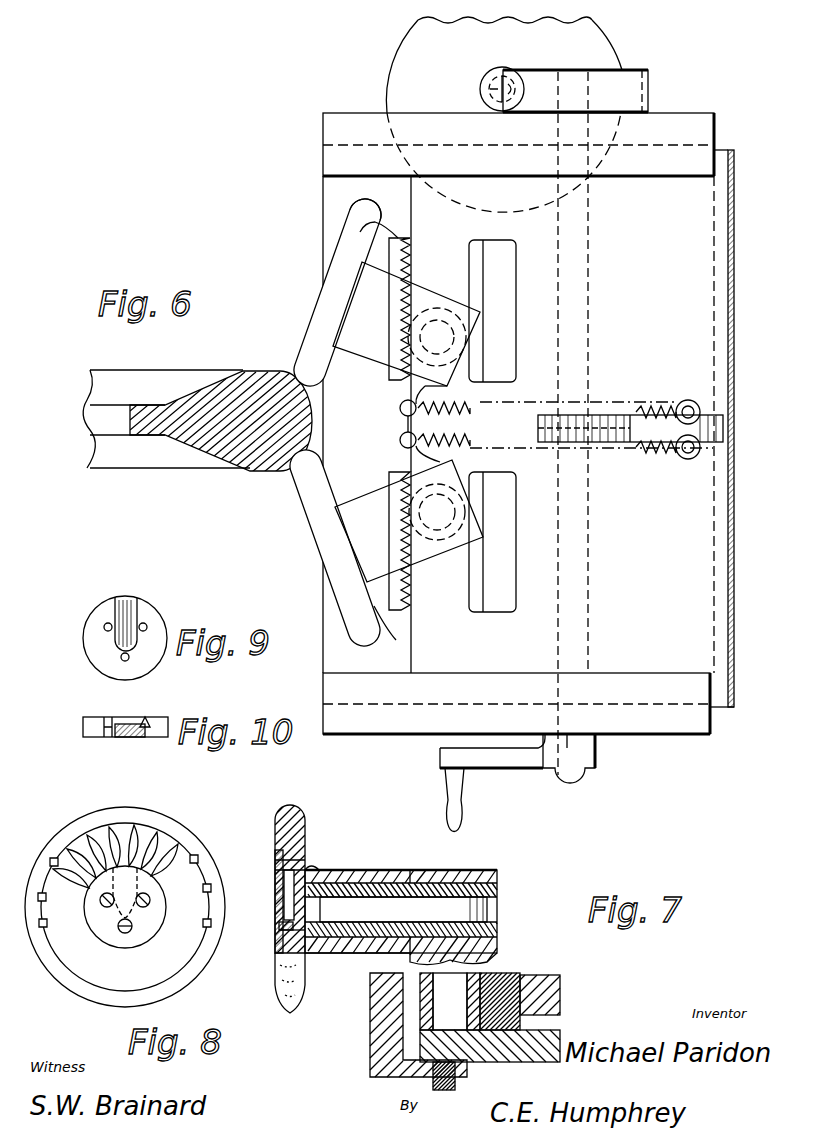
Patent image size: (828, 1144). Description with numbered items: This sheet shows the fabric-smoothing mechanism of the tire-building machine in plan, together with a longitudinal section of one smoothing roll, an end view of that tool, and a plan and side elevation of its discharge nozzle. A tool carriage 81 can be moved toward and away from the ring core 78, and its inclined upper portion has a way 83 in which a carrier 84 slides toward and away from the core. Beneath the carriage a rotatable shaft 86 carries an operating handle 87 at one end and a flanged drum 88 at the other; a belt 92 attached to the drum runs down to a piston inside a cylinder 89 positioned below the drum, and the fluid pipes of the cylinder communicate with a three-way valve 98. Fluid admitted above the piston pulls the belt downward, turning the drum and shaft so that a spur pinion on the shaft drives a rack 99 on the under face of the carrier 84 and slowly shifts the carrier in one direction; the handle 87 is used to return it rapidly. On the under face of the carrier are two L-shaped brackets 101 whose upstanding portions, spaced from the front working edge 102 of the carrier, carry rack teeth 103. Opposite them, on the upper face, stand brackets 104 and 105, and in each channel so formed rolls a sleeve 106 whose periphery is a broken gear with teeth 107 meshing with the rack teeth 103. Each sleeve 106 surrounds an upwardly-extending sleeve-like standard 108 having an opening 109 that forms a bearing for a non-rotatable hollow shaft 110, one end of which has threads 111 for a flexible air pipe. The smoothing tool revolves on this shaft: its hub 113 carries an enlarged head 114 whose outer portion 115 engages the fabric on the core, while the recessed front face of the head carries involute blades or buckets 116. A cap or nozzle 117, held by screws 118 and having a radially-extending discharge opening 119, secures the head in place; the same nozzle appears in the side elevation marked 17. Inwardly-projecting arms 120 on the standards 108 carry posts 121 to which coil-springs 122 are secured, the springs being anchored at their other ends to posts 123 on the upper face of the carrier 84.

In FIG. 10, the bar 17 is at (83, 727).
In FIG. 6, the core 78 is at (140, 420).
In FIG. 6, the tool carriage 81 is at (360, 98).
In FIG. 6, the way 83 is at (708, 150).
In FIG. 6, the carrier 84 is at (677, 428).
In FIG. 7, the carrier 84 is at (560, 1045).
In FIG. 6, the rotatable shaft 86 is at (574, 622).
In FIG. 6, the operating handle 87 is at (465, 800).
In FIG. 6, the flanged drum 88 is at (646, 75).
In FIG. 6, the cylinder 89 is at (504, 114).
In FIG. 6, the belt 92 is at (528, 80).
In FIG. 6, the three-way valve 98 is at (549, 414).
In FIG. 6, the rack 99 is at (622, 414).
In FIG. 6, the brackets 101 is at (400, 240).
In FIG. 7, the brackets 101 is at (370, 1023).
In FIG. 6, the front working edge 102 is at (414, 648).
In FIG. 6, the rack teeth 103 is at (406, 266).
In FIG. 7, the bracket 104 is at (562, 996).
In FIG. 6, the bracket 105 is at (516, 524).
In FIG. 7, the bracket 105 is at (433, 1078).
In FIG. 7, the sleeves 106 is at (505, 978).
In FIG. 6, the teeth 107 is at (445, 300).
In FIG. 6, the sleeve-like standard 108 is at (450, 380).
In FIG. 7, the sleeve-like standard 108 is at (497, 953).
In FIG. 6, the opening 109 is at (492, 311).
In FIG. 7, the opening 109 is at (497, 878).
In FIG. 7, the hollow shaft 110 is at (497, 891).
In FIG. 7, the threads 111 is at (497, 910).
In FIG. 6, the hub 113 is at (375, 340).
In FIG. 7, the hub 113 is at (401, 901).
In FIG. 6, the enlarged head 114 is at (330, 280).
In FIG. 7, the enlarged head 114 is at (307, 837).
In FIG. 8, the enlarged head 114 is at (112, 996).
In FIG. 6, the outer portion 115 is at (372, 210).
In FIG. 7, the outer portion 115 is at (294, 813).
In FIG. 8, the outer portion 115 is at (82, 815).
In FIG. 7, the blades or buckets 116 is at (283, 852).
In FIG. 8, the blades or buckets 116 is at (128, 830).
In FIG. 7, the cap or nozzle 117 is at (290, 936).
In FIG. 8, the cap or nozzle 117 is at (124, 933).
In FIG. 9, the cap or nozzle 117 is at (100, 658).
In FIG. 7, the screws 118 is at (283, 925).
In FIG. 8, the screws 118 is at (104, 906).
In FIG. 9, the screws 118 is at (104, 625).
In FIG. 10, the screws 118 is at (108, 717).
In FIG. 7, the discharge opening 119 is at (286, 892).
In FIG. 8, the discharge opening 119 is at (177, 907).
In FIG. 9, the discharge opening 119 is at (130, 603).
In FIG. 10, the discharge opening 119 is at (130, 738).
In FIG. 6, the inwardly-projecting arms 120 is at (400, 470).
In FIG. 6, the posts 121 is at (400, 440).
In FIG. 6, the coil-springs 122 is at (470, 408).
In FIG. 6, the posts 123 is at (701, 408).